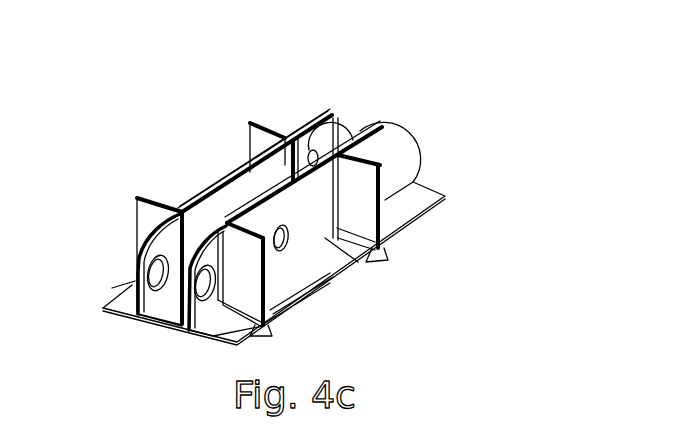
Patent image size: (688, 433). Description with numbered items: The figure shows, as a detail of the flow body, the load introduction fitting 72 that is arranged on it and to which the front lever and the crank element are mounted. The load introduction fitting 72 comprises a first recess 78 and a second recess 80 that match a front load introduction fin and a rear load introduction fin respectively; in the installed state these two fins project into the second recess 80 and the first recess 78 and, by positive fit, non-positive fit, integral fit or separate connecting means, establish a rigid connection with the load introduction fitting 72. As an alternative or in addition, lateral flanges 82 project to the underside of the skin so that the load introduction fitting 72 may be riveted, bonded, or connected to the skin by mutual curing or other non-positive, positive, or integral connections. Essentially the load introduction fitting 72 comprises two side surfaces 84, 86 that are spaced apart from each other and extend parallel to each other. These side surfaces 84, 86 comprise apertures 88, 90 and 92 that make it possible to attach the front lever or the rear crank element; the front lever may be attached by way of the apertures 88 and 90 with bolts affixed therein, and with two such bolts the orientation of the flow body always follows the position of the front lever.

The load introduction fitting 72 is at (181, 183).
The first recess 78 is at (137, 195).
The second recess 80 is at (249, 123).
The lateral flanges 82 is at (327, 273).
The side surface 84 is at (338, 207).
The side surface 86 is at (268, 163).
The aperture 88 is at (203, 328).
The aperture 90 is at (288, 248).
The aperture 92 is at (311, 145).